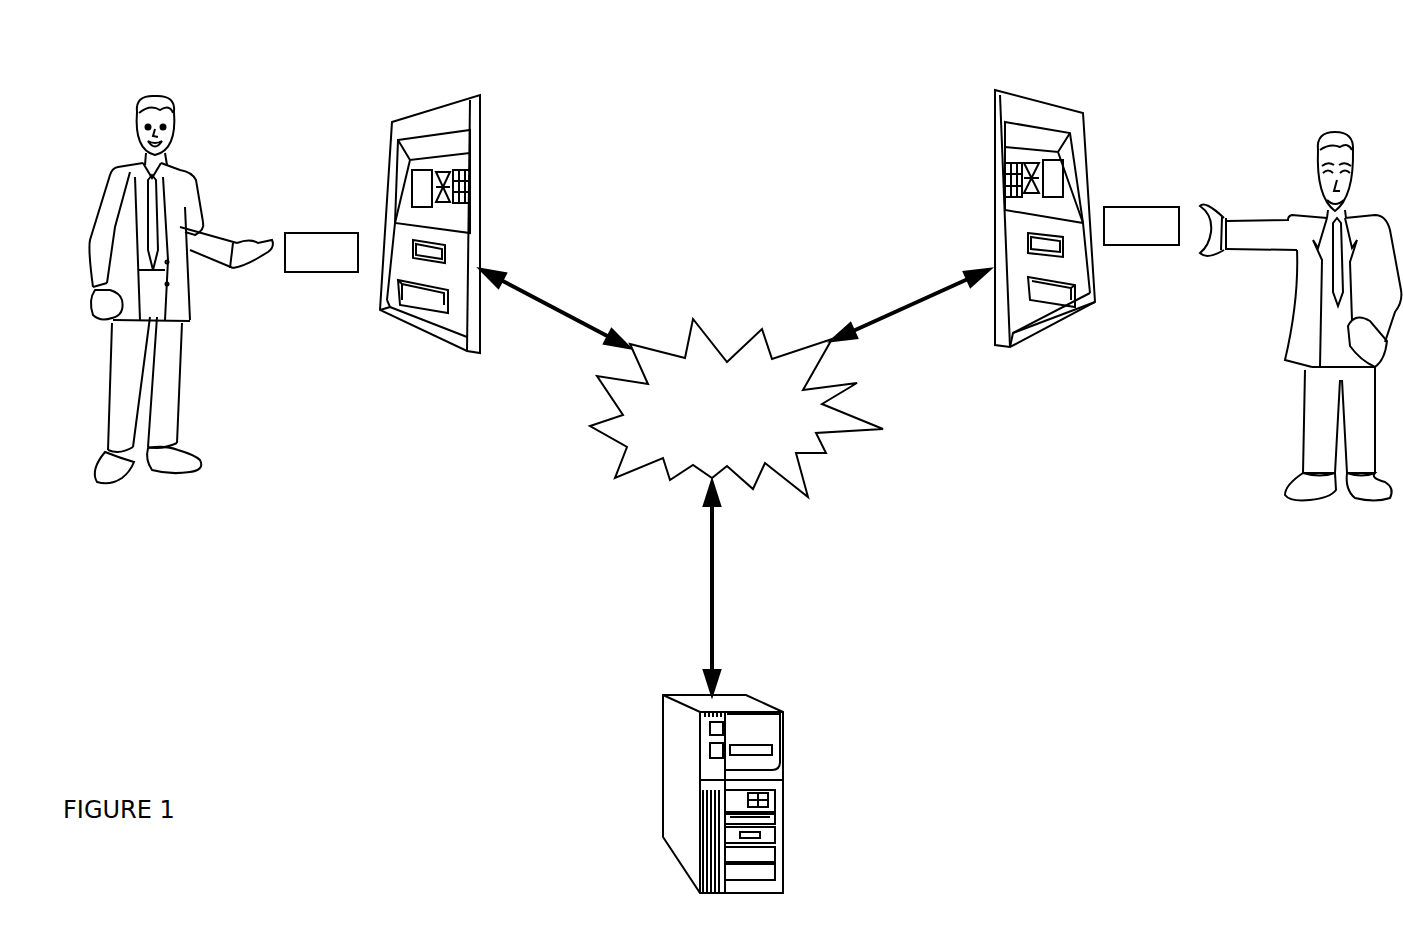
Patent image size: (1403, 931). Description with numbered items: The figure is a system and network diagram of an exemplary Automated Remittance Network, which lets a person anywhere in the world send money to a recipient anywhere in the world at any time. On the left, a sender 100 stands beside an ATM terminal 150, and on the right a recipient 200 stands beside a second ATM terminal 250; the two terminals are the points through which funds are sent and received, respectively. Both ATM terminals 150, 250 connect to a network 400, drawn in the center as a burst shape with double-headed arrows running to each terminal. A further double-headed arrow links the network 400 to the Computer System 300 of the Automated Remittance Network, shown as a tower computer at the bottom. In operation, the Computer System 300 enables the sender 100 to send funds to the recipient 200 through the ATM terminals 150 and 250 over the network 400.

The sender 100 is at (223, 283).
The ATM terminal 150 is at (431, 188).
The ATM terminal 250 is at (1087, 184).
The recipient 200 is at (1301, 310).
The network 400 is at (736, 408).
The Computer System 300 is at (815, 770).